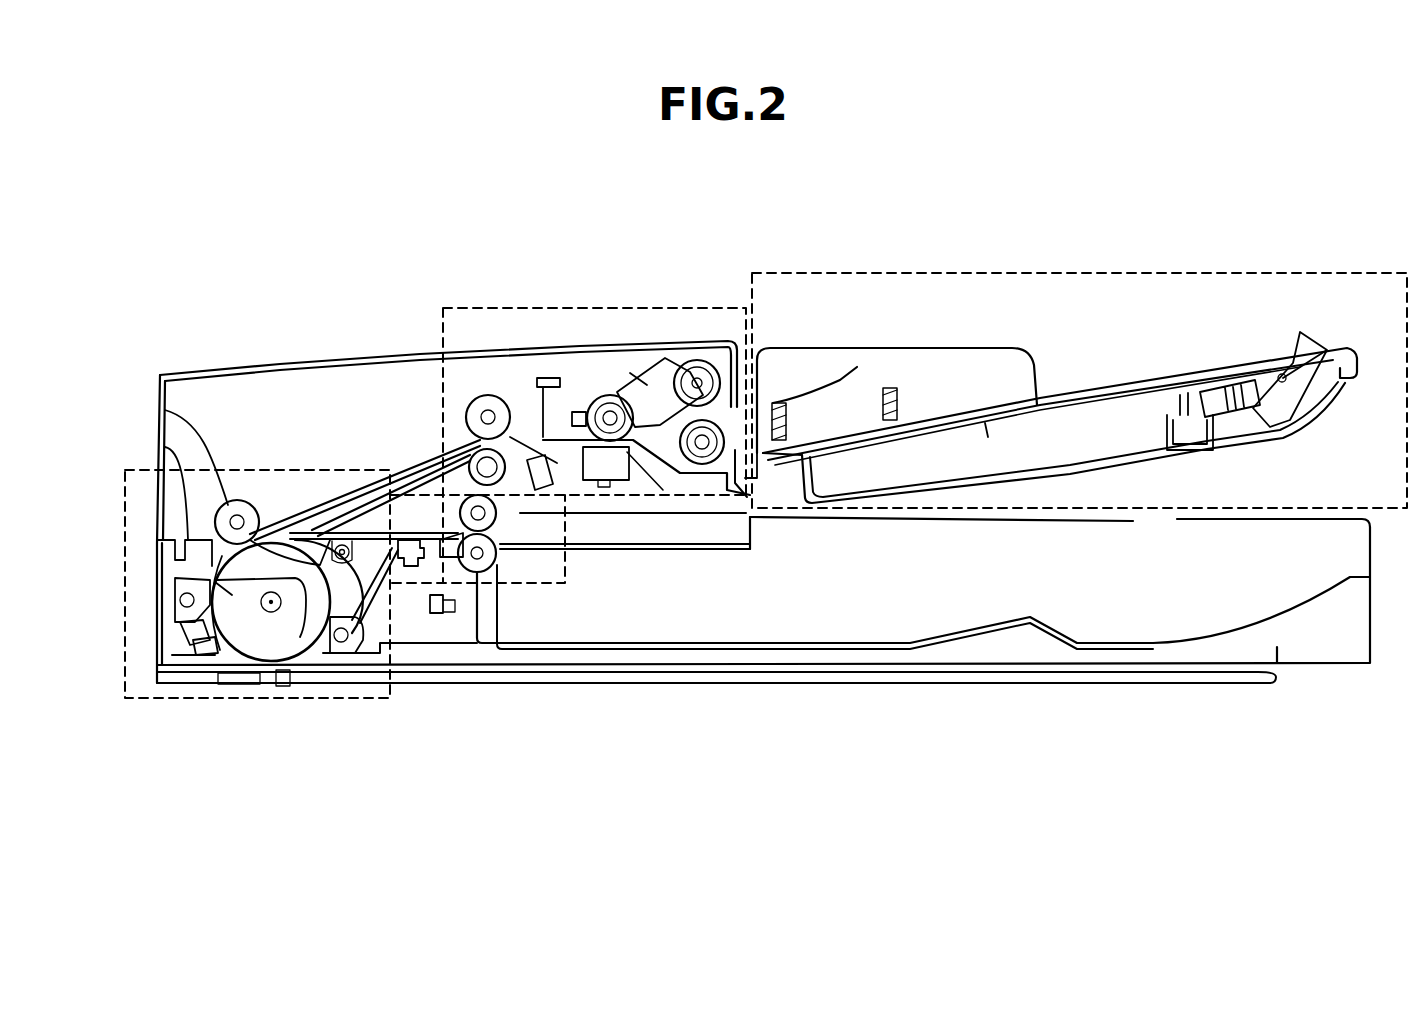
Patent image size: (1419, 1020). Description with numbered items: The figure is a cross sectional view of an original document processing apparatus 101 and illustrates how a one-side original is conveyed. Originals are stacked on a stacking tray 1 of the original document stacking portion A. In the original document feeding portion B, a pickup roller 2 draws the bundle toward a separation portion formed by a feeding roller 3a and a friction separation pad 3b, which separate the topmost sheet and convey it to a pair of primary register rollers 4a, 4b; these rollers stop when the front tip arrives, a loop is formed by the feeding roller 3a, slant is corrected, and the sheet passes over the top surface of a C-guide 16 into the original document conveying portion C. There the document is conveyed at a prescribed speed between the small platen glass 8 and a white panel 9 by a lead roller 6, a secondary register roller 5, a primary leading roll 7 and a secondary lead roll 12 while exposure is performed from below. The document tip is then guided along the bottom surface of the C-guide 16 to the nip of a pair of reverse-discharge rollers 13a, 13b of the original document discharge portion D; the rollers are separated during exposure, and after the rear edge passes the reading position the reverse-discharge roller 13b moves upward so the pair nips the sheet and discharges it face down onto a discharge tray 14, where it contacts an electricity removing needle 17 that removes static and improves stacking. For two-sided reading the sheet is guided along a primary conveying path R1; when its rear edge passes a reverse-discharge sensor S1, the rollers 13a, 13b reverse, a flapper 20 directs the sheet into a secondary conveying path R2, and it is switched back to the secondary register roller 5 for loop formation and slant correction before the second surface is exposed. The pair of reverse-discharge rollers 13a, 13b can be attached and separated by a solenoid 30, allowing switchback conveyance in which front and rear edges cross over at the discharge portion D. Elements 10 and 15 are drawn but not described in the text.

The stacking tray 1 is at (1002, 407).
The pickup roller 2 is at (695, 360).
The feeding roller 3a is at (590, 395).
The friction separation pad 3b is at (628, 472).
The primary register roller 4a is at (480, 396).
The primary register roller 4b is at (462, 460).
The secondary register roller 5 is at (165, 410).
The lead roller 6 is at (165, 447).
The primary leading roll 7 is at (207, 667).
The small platen glass 8 is at (233, 683).
The white panel 9 is at (277, 680).
The support member 10 is at (288, 680).
The secondary lead roll 12 is at (340, 653).
The reverse-discharge roller 13a is at (497, 550).
The reverse-discharge roller 13b is at (493, 556).
The discharge tray 14 is at (667, 653).
The bottom plate 15 is at (887, 684).
The C-guide 16 is at (417, 492).
The electricity removing needle 17 is at (500, 511).
The flapper 20 is at (347, 522).
The solenoid 30 is at (448, 632).
The original document processing apparatus 101 is at (288, 364).
The original document stacking portion A is at (1306, 303).
The original document feeding portion B is at (521, 336).
The original document conveying portion C is at (255, 500).
The original document discharge portion D is at (440, 617).
The primary conveying path R1 is at (383, 592).
The secondary conveying path R2 is at (265, 495).
The reverse-discharge sensor S1 is at (425, 617).